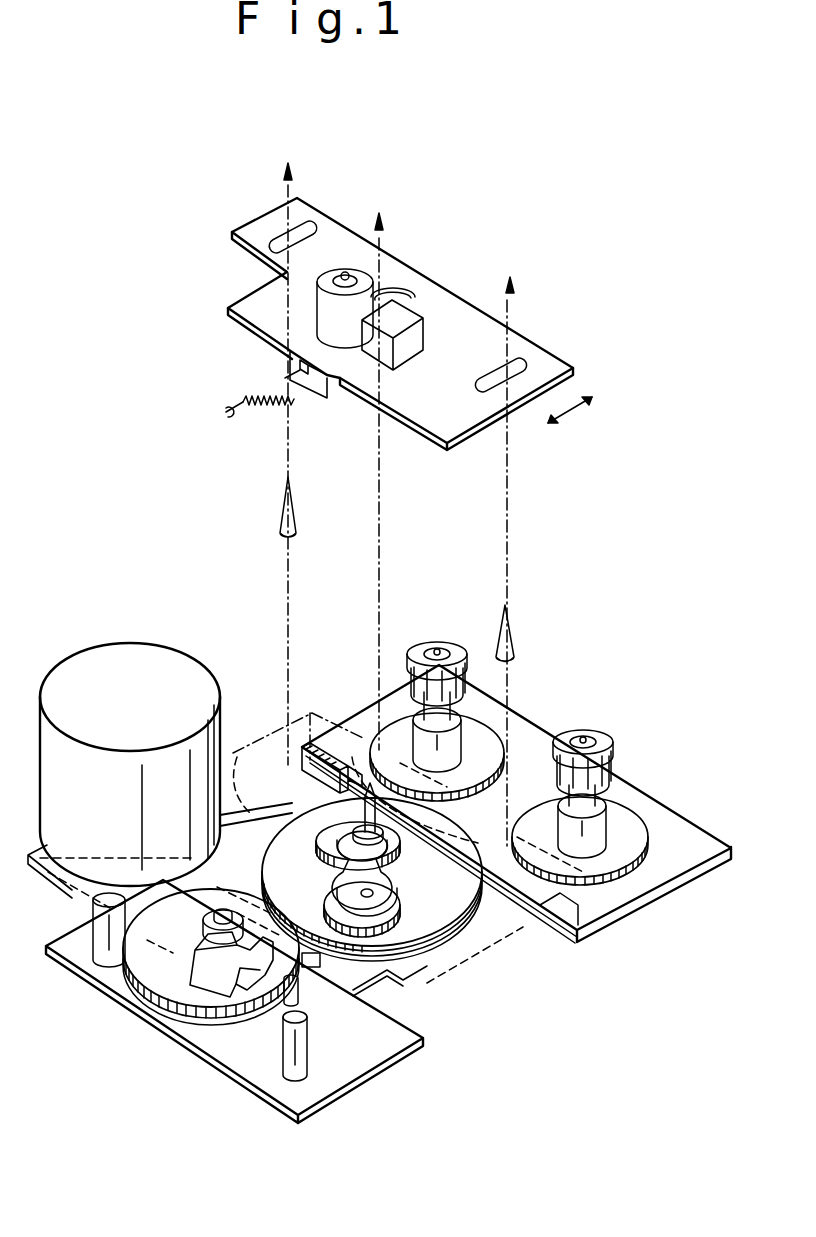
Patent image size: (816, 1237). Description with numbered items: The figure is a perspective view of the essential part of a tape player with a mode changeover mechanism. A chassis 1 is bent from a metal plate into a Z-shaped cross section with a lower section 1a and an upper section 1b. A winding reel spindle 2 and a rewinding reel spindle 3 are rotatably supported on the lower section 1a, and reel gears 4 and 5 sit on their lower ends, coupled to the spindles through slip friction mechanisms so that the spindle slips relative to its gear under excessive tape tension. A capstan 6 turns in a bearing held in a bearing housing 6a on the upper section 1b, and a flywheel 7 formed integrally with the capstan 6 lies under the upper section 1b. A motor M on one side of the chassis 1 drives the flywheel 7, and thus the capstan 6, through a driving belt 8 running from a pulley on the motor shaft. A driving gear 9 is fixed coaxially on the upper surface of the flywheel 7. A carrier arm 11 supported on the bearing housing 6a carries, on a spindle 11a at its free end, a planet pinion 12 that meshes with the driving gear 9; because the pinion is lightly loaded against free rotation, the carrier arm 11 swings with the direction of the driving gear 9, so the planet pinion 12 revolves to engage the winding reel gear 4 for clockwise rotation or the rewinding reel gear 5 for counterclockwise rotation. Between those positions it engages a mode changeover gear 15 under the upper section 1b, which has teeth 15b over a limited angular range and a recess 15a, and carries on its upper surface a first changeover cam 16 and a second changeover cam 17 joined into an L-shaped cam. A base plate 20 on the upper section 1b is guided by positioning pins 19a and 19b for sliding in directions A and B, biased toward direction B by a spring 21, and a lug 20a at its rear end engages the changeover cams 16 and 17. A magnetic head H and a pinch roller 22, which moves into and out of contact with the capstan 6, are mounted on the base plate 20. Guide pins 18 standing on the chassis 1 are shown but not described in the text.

The chassis 1 is at (548, 922).
The lower section of the chassis 1a is at (613, 893).
The upper section of the chassis 1b is at (470, 963).
The winding reel spindle 2 is at (458, 650).
The rewinding reel spindle 3 is at (600, 745).
The winding reel gear 4 is at (483, 742).
The rewinding reel gear 5 is at (628, 828).
The capstan 6 is at (378, 762).
The bearing housing 6a is at (480, 905).
The flywheel 7 is at (478, 928).
The driving belt 8 is at (240, 790).
The driving gear 9 is at (318, 832).
The carrier arm 11 is at (377, 950).
The spindle 11a is at (361, 893).
The planet pinion 12 is at (402, 918).
The mode changeover gear 15 is at (140, 963).
The recess 15a is at (243, 1017).
The teeth 15b is at (163, 1022).
The first changeover cam 16 is at (200, 940).
The second changeover cam 17 is at (270, 1003).
The guide pins 18 is at (300, 1010).
The positioning pin 19a is at (297, 518).
The positioning pin 19b is at (516, 627).
The base plate 20 is at (464, 328).
The lug 20a is at (312, 396).
The spring 21 is at (253, 390).
The pinch roller 22 is at (350, 276).
The motor M is at (95, 665).
The magnetic head H is at (412, 320).
The direction A is at (583, 400).
The direction B is at (539, 441).